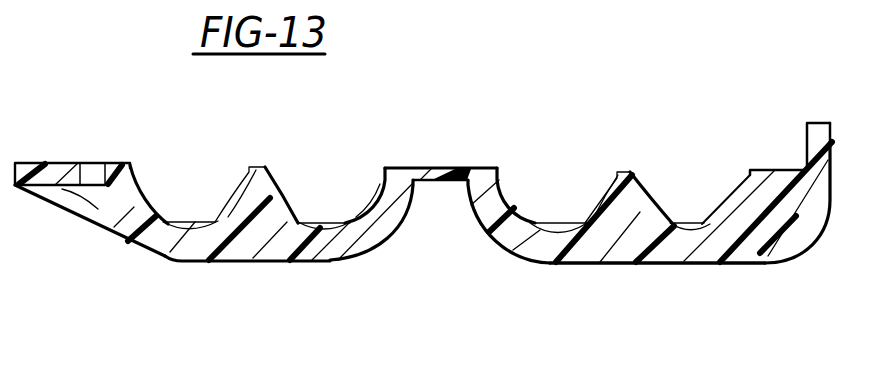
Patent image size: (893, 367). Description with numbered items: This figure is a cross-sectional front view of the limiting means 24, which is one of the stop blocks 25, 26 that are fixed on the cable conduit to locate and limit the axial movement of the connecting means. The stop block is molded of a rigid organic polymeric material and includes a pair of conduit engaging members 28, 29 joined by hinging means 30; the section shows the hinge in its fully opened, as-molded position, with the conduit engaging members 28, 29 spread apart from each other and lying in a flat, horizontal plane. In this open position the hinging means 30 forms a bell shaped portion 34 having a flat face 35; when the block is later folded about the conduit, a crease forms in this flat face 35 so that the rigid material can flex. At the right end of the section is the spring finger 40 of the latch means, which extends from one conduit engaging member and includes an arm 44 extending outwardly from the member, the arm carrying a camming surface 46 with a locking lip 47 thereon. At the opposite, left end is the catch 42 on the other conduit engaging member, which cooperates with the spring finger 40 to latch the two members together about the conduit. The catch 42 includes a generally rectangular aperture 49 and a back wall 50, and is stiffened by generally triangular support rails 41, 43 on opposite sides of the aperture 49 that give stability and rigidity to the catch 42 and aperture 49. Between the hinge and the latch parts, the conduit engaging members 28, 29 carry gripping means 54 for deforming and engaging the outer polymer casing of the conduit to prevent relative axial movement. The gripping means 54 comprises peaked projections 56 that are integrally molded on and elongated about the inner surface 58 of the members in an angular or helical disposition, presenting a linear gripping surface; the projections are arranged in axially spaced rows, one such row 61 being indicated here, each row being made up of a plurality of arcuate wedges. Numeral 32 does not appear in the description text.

The limiting means 24 is at (562, 150).
The stop block 25 is at (707, 265).
The stop block 26 is at (707, 265).
The conduit engaging member 28 is at (300, 263).
The conduit engaging member 29 is at (547, 265).
The hinging means 30 is at (462, 167).
The platform wall 32 is at (462, 167).
The bell shaped portion 34 is at (440, 183).
The flat face 35 is at (395, 167).
The spring finger 40 is at (807, 147).
The support rail 41 is at (98, 207).
The support rail 43 is at (98, 207).
The catch 42 is at (80, 163).
The arm 44 is at (807, 122).
The camming surface 46 is at (838, 128).
The locking lip 47 is at (834, 148).
The aperture 49 is at (92, 165).
The back wall 50 is at (62, 190).
The gripping means 54 is at (688, 195).
The peaked projection 56 is at (702, 222).
The inner surface 58 is at (133, 170).
The row 61 is at (645, 190).